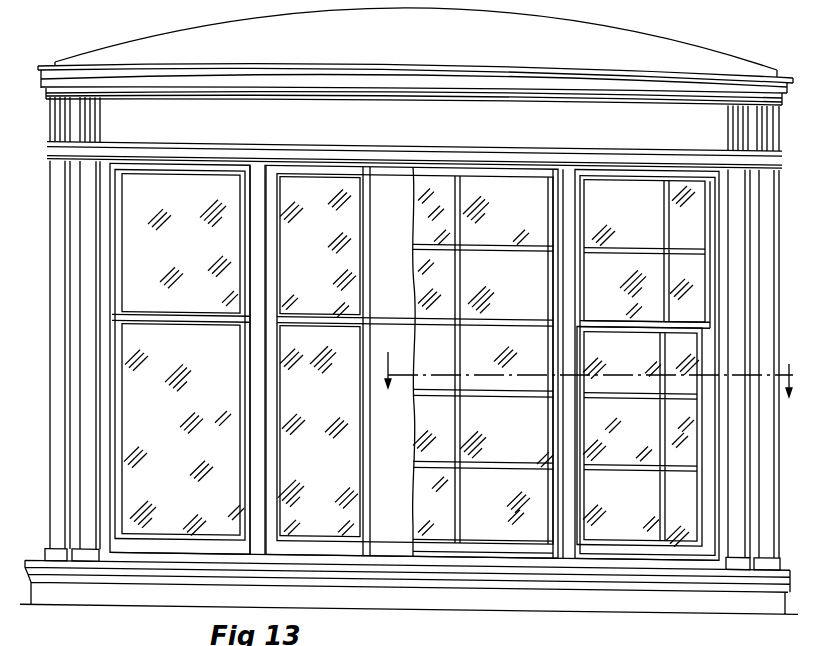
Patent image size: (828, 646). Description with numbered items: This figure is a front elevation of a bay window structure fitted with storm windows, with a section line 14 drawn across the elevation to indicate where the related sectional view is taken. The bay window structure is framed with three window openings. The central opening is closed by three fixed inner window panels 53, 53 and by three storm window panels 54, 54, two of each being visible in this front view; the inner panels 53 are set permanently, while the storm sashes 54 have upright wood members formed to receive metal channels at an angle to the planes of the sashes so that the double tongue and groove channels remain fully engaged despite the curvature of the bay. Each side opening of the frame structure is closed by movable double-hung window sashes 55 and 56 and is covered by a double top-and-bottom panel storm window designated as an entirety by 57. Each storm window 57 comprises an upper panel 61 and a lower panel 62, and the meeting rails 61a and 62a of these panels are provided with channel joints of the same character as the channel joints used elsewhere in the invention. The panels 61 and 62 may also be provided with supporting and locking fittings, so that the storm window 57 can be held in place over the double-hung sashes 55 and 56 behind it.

The section line 14- 14 is at (589, 366).
The fixed inner window panel 53 is at (432, 543).
The storm window panel 54 is at (273, 272).
The double-hung window sash 55 is at (600, 547).
The double-hung window sash 56 is at (614, 173).
The storm window 57 is at (117, 276).
The upper panel 61 is at (118, 213).
The meeting rail 61a is at (158, 313).
The lower panel 62 is at (117, 413).
The meeting rail 62a is at (146, 321).